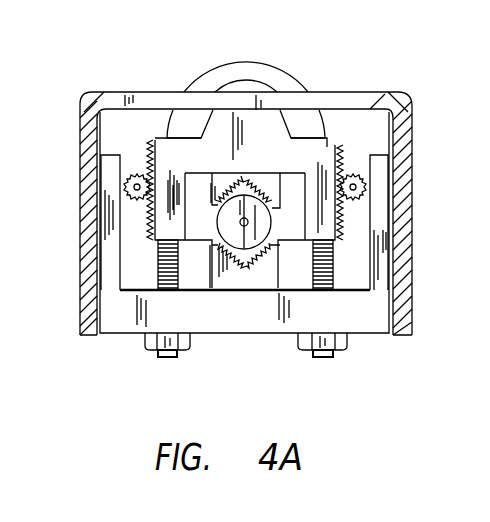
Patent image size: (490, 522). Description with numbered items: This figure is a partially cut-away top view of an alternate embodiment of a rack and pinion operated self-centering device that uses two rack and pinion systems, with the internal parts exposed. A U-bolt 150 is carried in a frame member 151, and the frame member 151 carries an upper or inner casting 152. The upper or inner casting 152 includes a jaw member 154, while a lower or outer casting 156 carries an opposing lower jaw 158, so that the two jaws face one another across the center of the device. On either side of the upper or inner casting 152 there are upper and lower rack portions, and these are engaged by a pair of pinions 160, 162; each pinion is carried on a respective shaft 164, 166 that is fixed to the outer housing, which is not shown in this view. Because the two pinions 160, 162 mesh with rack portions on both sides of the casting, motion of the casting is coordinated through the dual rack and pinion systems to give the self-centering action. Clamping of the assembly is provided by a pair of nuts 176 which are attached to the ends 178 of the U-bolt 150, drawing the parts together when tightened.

The U-bolt 150 is at (254, 63).
The frame member 151 is at (338, 107).
The upper or inner casting 152 is at (163, 150).
The jaw member 154 is at (215, 182).
The lower or outer casting 156 is at (384, 233).
The lower jaw 158 is at (219, 262).
The pinion 160 is at (146, 181).
The pinion 162 is at (362, 194).
The shaft 164 is at (128, 188).
The shaft 166 is at (365, 181).
The nut 176 is at (145, 340).
The end of U-bolt 178 is at (166, 358).